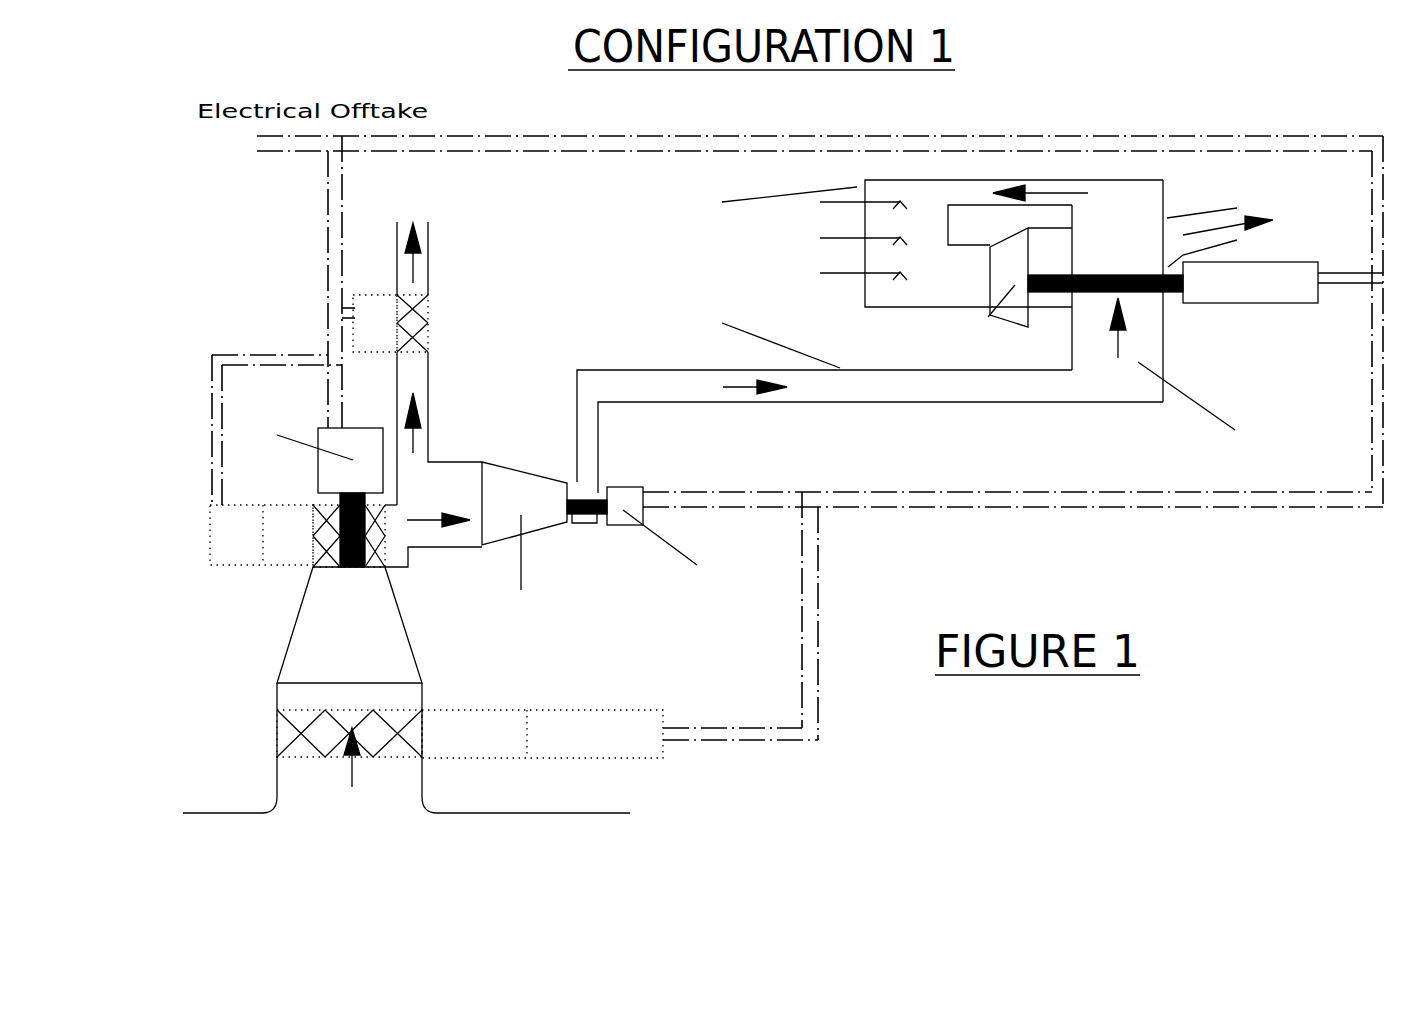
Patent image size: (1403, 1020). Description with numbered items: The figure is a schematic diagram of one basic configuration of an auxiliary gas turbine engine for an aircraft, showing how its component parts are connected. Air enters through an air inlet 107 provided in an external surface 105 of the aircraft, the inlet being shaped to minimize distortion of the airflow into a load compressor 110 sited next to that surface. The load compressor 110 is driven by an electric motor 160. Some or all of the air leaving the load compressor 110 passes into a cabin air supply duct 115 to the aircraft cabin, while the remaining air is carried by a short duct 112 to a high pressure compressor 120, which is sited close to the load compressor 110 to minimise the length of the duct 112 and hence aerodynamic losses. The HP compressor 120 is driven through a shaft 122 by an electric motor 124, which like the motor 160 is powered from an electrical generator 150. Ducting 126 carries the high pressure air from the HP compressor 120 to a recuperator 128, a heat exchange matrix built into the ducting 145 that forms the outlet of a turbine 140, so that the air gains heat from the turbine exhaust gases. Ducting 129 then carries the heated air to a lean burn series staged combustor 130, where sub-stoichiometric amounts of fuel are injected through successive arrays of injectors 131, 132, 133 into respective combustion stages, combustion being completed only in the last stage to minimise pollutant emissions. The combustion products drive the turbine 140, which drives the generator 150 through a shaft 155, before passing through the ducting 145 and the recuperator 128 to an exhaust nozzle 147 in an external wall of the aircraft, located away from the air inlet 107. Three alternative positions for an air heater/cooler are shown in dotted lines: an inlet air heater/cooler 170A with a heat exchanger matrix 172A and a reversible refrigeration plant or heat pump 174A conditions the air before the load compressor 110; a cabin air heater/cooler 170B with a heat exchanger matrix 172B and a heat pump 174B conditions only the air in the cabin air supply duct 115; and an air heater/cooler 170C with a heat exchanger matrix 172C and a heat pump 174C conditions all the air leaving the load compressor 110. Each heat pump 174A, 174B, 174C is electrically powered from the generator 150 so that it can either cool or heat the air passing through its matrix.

The external surface 105 is at (510, 815).
The air inlet 107 is at (422, 815).
The load compressor 110 is at (360, 616).
The duct 112 is at (467, 548).
The cabin air supply duct 115 is at (432, 402).
The high pressure compressor 120 is at (537, 509).
The shaft 122 is at (587, 523).
The electric motor 124 is at (690, 546).
The ducting 126 is at (870, 393).
The recuperator 128 is at (1194, 332).
The ducting 129 is at (1085, 175).
The combustor 130 is at (925, 243).
The injectors 131 is at (878, 208).
The injectors 132 is at (878, 245).
The injectors 133 is at (878, 278).
The turbine 140 is at (1027, 279).
The ducting 145 is at (1063, 315).
The exhaust nozzle 147 is at (1225, 207).
The electrical generator 150 is at (1275, 305).
The shaft 155 is at (1143, 272).
The electric motor 160 is at (368, 491).
The inlet air heater/cooler 170A is at (560, 668).
The cabin air heater/cooler 170B is at (440, 311).
The air heater/cooler 170C is at (278, 564).
The heat exchanger matrix 172A is at (277, 733).
The heat exchanger matrix 172B is at (430, 335).
The heat exchanger matrix 172C is at (322, 505).
The reversible refrigeration plant or heat pump 174A is at (542, 734).
The reversible refrigeration plant or heat pump 174B is at (365, 300).
The reversible refrigeration plant or heat pump 174C is at (261, 535).